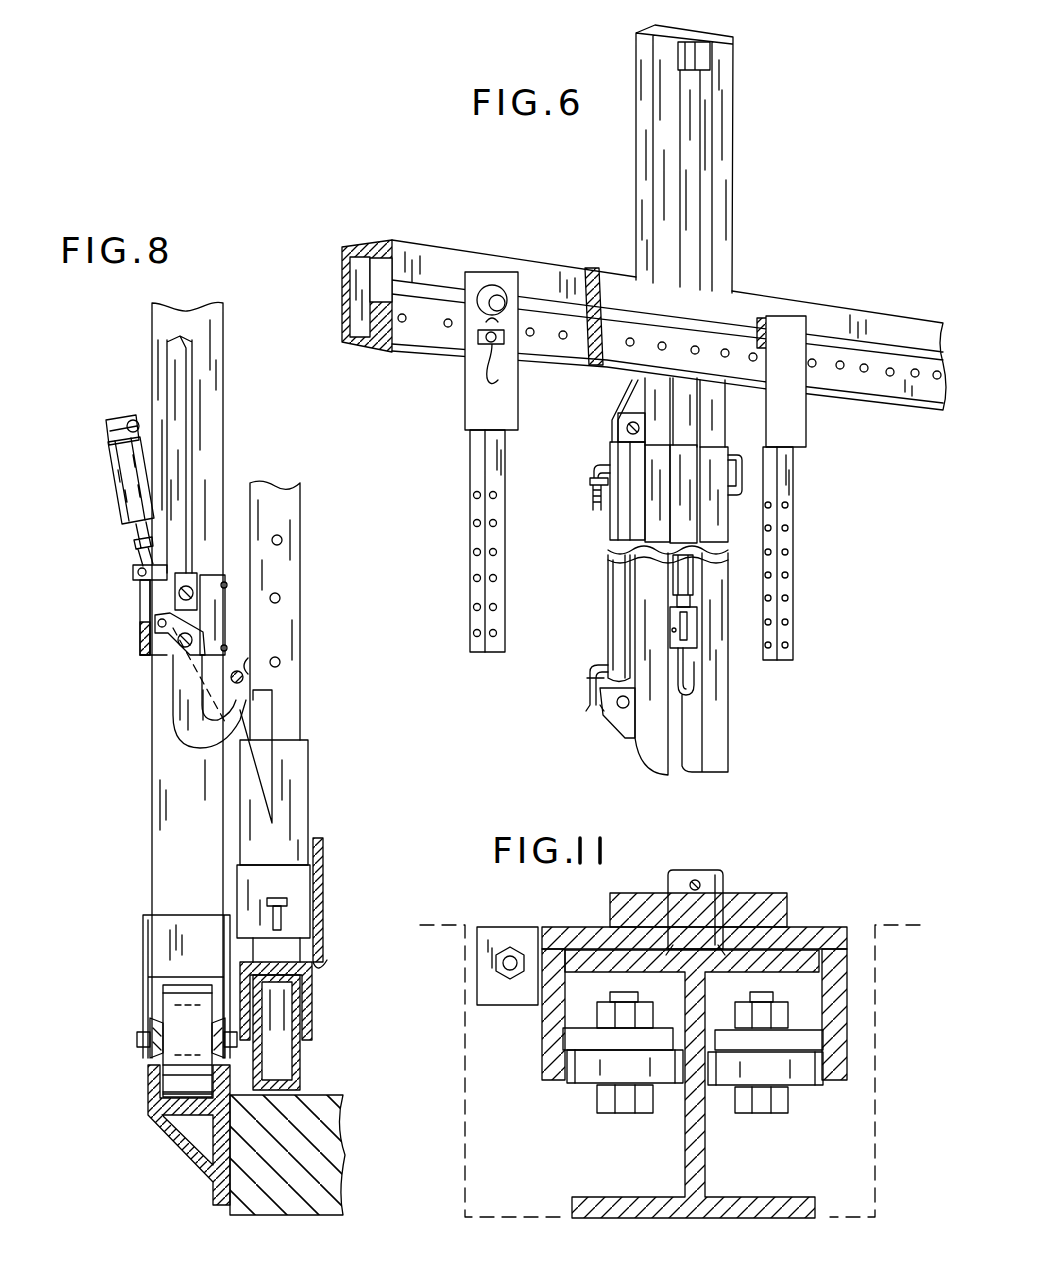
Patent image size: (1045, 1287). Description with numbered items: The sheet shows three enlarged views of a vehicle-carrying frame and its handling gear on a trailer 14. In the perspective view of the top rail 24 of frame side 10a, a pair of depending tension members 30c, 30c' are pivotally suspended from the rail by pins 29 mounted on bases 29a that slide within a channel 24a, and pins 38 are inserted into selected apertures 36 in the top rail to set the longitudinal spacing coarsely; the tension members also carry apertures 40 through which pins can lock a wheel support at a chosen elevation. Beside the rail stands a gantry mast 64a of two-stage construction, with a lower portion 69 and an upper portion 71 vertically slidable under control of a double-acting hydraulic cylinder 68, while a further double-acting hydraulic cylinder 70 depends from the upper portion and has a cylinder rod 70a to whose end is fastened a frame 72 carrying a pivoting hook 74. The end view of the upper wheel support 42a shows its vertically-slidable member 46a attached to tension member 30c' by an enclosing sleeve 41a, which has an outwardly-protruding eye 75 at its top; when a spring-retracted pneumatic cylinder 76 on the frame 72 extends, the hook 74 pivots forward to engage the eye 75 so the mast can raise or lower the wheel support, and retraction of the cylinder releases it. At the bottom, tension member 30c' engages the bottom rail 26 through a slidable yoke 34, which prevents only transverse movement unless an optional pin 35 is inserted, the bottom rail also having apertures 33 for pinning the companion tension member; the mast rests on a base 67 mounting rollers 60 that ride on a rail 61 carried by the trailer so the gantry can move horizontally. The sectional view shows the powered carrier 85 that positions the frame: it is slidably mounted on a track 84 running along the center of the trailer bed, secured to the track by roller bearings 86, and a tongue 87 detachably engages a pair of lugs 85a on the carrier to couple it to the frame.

In FIG. 6, the side 10a is at (884, 298).
In FIG. 8, the trailer 14 is at (338, 1094).
In FIG. 11, the trailer 14 is at (453, 924).
In FIG. 6, the top rail 24 is at (793, 296).
In FIG. 6, the channel 24a is at (400, 300).
In FIG. 8, the bottom rail 26 is at (302, 1062).
In FIG. 6, the pin 29 is at (498, 294).
In FIG. 6, the base 29a is at (455, 297).
In FIG. 6, the tension member 30c is at (449, 462).
In FIG. 6, the tension member 30c' is at (819, 488).
In FIG. 8, the tension member 30c' is at (311, 610).
In FIG. 8, the aperture 33 is at (278, 992).
In FIG. 8, the slidable yoke 34 is at (312, 1003).
In FIG. 8, the pin 35 is at (286, 897).
In FIG. 6, the aperture 36 is at (893, 374).
In FIG. 6, the pin 38 is at (810, 426).
In FIG. 6, the aperture 40 is at (470, 478).
In FIG. 8, the aperture 40 is at (282, 540).
In FIG. 8, the sleeve 41a is at (228, 880).
In FIG. 8, the upper wheel support 42a is at (338, 790).
In FIG. 8, the vertically-slidable member 46a is at (323, 845).
In FIG. 8, the roller 60 is at (177, 1048).
In FIG. 8, the rail 61 is at (148, 1086).
In FIG. 6, the mast 64a is at (585, 601).
In FIG. 8, the mast 64a is at (118, 818).
In FIG. 8, the base 67 is at (170, 915).
In FIG. 6, the double-acting hydraulic cylinder 68 is at (612, 578).
In FIG. 6, the lower portion 69 is at (722, 718).
In FIG. 8, the lower portion 69 is at (152, 777).
In FIG. 6, the double-acting hydraulic cylinder 70 is at (690, 213).
In FIG. 6, the cylinder rod 70a is at (693, 600).
In FIG. 8, the cylinder rod 70a is at (192, 437).
In FIG. 6, the upper portion 71 is at (732, 148).
In FIG. 6, the frame 72 is at (697, 630).
In FIG. 8, the frame 72 is at (128, 418).
In FIG. 6, the hook 74 is at (695, 668).
In FIG. 8, the hook 74 is at (173, 728).
In FIG. 8, the eye 75 is at (245, 672).
In FIG. 8, the pneumatic cylinder 76 is at (112, 483).
In FIG. 11, the track 84 is at (601, 950).
In FIG. 11, the carrier 85 is at (822, 927).
In FIG. 11, the lug 85a is at (700, 870).
In FIG. 11, the roller bearing 86 is at (586, 1083).
In FIG. 11, the tongue 87 is at (637, 893).